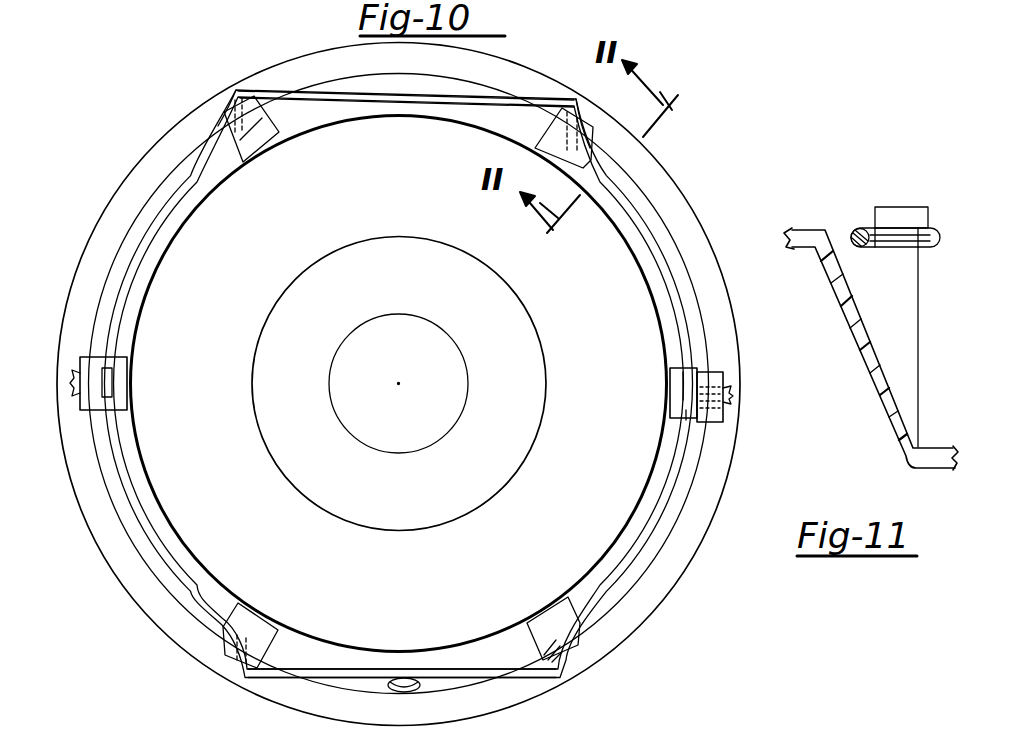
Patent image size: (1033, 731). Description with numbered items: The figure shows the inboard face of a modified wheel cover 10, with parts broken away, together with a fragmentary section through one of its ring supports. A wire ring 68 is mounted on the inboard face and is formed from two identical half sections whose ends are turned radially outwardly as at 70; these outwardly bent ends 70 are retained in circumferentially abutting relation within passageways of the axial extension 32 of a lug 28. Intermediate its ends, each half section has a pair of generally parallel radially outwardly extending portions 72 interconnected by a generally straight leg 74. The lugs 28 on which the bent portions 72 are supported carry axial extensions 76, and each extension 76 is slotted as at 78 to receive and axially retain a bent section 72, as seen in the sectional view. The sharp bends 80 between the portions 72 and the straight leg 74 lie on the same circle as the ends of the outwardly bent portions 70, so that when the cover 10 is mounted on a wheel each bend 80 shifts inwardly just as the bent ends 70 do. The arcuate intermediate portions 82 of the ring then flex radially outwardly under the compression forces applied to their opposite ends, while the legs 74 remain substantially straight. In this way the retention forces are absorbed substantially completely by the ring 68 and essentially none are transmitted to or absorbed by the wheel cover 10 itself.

In FIG. 10, the wheel cover 10 is at (178, 650).
In FIG. 11, the lug 28 is at (903, 343).
In FIG. 10, the axial extension 32 is at (710, 372).
In FIG. 10, the wire ring 68 is at (664, 229).
In FIG. 10, the outwardly bent ends 70 is at (105, 392).
In FIG. 10, the radially outwardly extending portions 72 is at (270, 133).
In FIG. 10, the straight leg 74 is at (413, 102).
In FIG. 11, the axial extension 76 is at (899, 208).
In FIG. 11, the slot 78 is at (895, 248).
In FIG. 10, the sharp bends 80 is at (238, 90).
In FIG. 10, the arcuate intermediate portions 82 is at (168, 217).